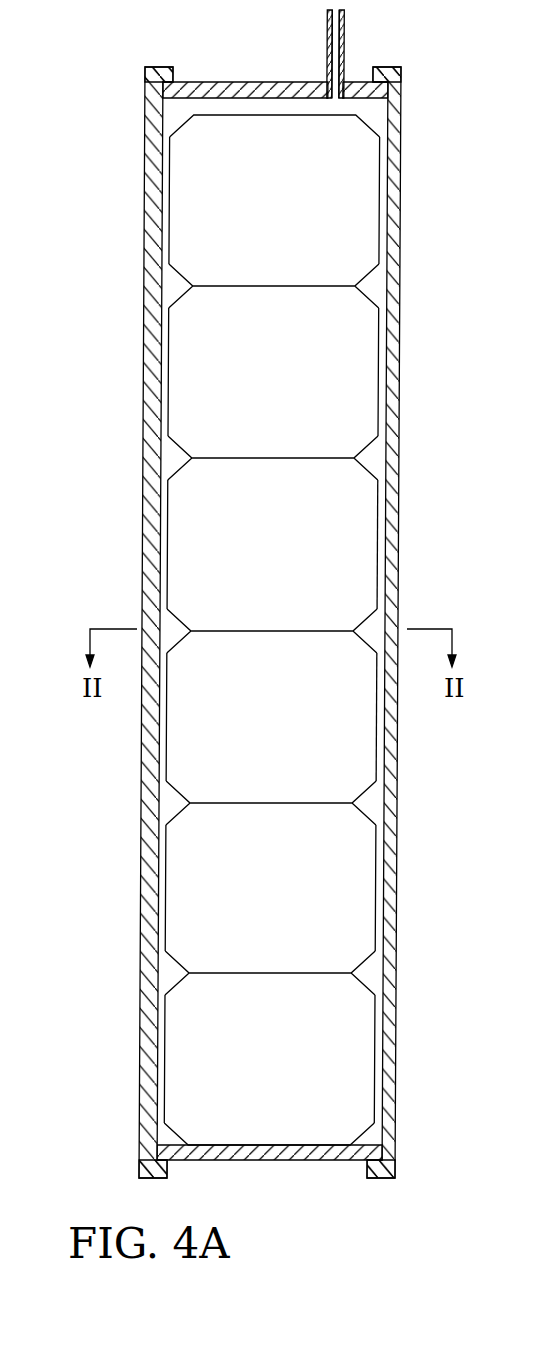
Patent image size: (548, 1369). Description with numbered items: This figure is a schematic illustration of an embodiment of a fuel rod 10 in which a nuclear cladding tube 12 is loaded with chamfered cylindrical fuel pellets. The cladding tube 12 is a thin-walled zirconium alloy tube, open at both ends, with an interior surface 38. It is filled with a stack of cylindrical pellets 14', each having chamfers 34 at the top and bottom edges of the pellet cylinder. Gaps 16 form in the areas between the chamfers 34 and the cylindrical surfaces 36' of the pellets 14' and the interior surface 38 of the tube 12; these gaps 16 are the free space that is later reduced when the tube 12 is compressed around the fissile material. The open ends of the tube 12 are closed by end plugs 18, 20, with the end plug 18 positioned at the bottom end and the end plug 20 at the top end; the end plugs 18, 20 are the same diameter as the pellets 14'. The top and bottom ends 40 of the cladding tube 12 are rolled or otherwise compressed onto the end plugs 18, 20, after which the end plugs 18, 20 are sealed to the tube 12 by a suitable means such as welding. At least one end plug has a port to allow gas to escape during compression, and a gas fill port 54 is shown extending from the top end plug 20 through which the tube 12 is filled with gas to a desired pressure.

The fuel rod 10 is at (102, 137).
The cladding tube 12 is at (397, 166).
The cylindrical pellets 14' is at (315, 630).
The gaps 16 is at (365, 802).
The end plug 18 is at (340, 1155).
The end plug 20 is at (198, 82).
The chamfers 34 is at (362, 450).
The cylindrical surfaces 36' is at (419, 717).
The interior surface 38 is at (366, 570).
The top and bottom ends 40 is at (400, 72).
The gas fill port 54 is at (344, 26).